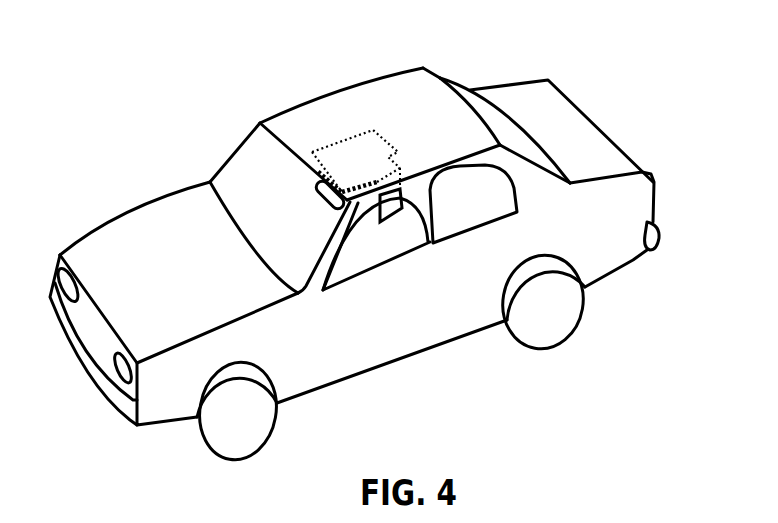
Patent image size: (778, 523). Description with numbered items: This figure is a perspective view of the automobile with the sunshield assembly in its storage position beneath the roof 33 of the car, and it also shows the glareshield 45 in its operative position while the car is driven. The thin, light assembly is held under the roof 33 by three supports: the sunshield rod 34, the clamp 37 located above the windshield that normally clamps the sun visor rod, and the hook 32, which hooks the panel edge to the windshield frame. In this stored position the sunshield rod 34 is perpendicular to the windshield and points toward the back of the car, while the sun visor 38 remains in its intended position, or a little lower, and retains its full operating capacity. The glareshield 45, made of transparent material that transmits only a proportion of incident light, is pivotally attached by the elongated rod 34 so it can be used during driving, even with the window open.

The hook 32 is at (312, 157).
The roof 33 is at (345, 112).
The sunshield rod 34 is at (354, 190).
The clamp 37 is at (322, 176).
The sun visor 38 is at (347, 198).
The glareshield 45 is at (405, 198).